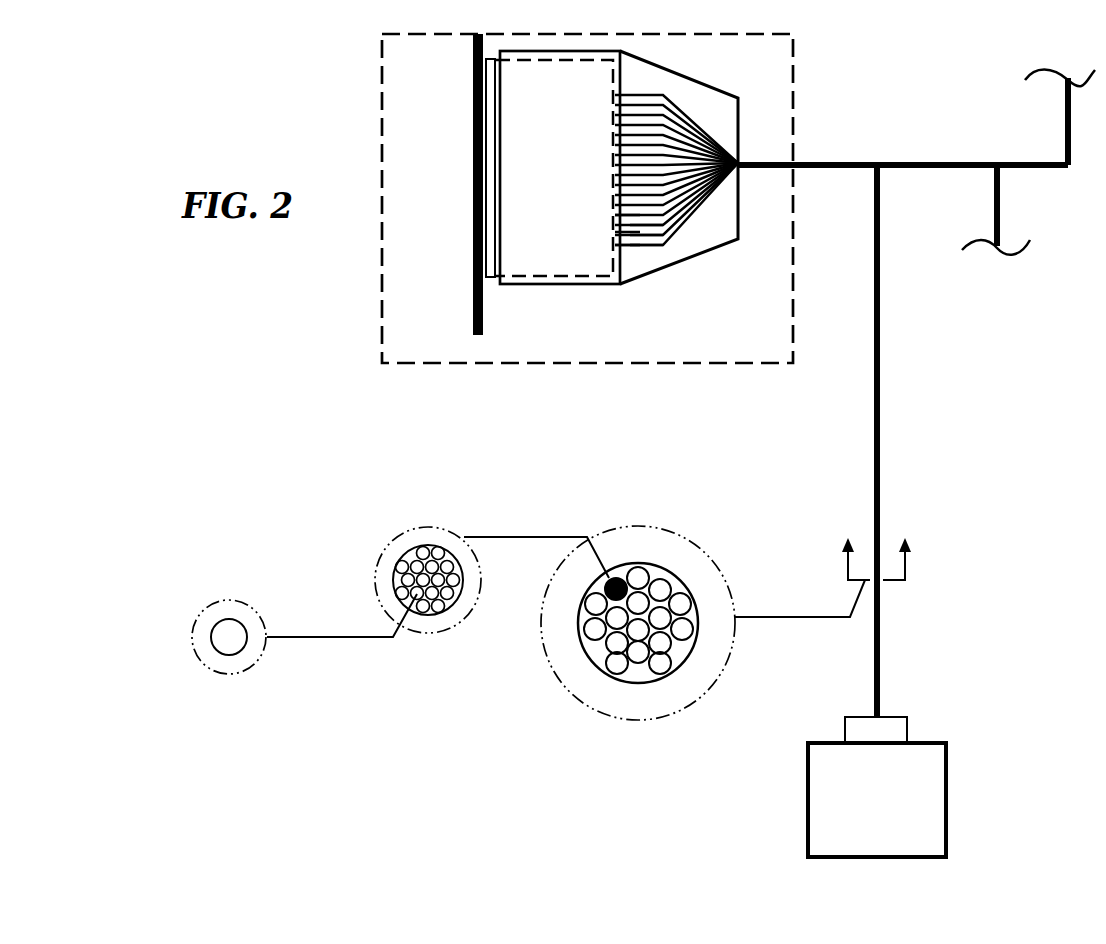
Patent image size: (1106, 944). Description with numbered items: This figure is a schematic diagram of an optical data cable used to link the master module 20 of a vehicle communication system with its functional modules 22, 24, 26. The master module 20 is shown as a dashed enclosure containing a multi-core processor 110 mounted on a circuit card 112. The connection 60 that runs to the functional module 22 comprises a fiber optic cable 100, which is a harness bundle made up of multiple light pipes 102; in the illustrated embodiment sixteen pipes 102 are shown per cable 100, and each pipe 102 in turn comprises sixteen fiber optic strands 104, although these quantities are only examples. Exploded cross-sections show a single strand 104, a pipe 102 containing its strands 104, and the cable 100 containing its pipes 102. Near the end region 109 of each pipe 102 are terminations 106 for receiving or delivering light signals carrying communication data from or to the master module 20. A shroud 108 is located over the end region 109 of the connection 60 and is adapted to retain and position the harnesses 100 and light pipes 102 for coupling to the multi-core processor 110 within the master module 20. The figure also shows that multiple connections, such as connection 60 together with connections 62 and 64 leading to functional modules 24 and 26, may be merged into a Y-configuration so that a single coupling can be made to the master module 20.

The master module 20 is at (382, 312).
The functional module 22 is at (891, 813).
The functional module 24 is at (1008, 281).
The functional module 26 is at (1078, 66).
The connection 60 is at (866, 292).
The connection 62 is at (987, 208).
The connection 64 is at (1052, 134).
The fiber optic cable 100 is at (618, 684).
The light pipe 102 is at (640, 228).
The fiber optic strand 104 is at (219, 622).
The termination 106 is at (615, 215).
The shroud 108 is at (728, 93).
The end region 109 is at (650, 86).
The multi-core processor 110 is at (490, 280).
The circuit card 112 is at (473, 313).